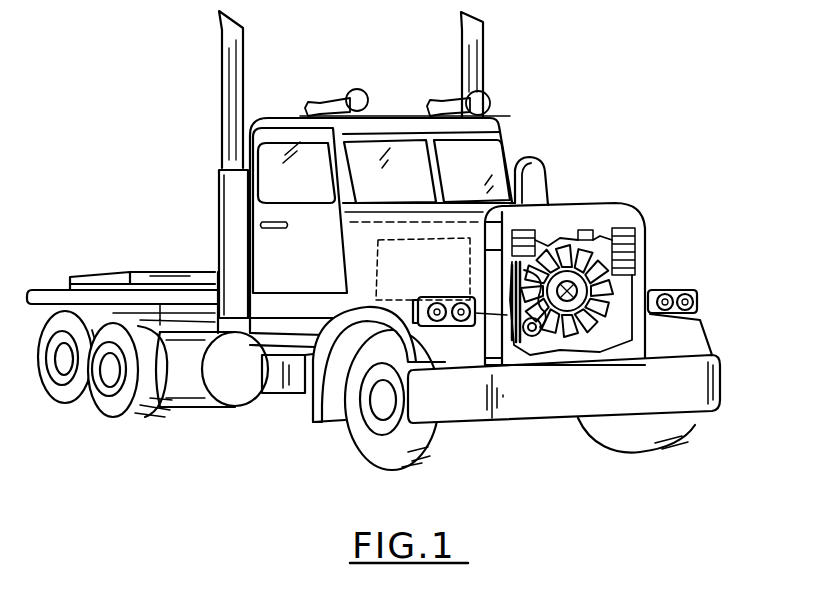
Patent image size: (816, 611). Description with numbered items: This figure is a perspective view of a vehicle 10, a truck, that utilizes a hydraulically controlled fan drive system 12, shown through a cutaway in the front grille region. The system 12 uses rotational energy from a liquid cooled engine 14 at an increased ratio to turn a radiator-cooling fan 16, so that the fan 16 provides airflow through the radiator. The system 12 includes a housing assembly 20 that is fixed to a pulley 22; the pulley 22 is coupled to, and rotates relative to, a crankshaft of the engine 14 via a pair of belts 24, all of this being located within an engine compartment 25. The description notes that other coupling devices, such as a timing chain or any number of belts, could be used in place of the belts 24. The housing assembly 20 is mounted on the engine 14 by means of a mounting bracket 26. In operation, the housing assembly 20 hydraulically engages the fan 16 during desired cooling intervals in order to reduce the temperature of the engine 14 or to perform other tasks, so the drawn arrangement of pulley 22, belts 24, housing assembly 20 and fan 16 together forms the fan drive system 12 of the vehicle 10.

The vehicle 10 is at (400, 118).
The hydraulically controlled fan drive system 12 is at (542, 241).
The liquid cooled engine 14 is at (440, 248).
The radiator-cooling fan 16 is at (637, 270).
The housing assembly 20 is at (516, 331).
The pulley 22 is at (510, 270).
The pair of belts 24 is at (522, 345).
The engine compartment 25 is at (400, 238).
The mounting bracket 26 is at (508, 290).